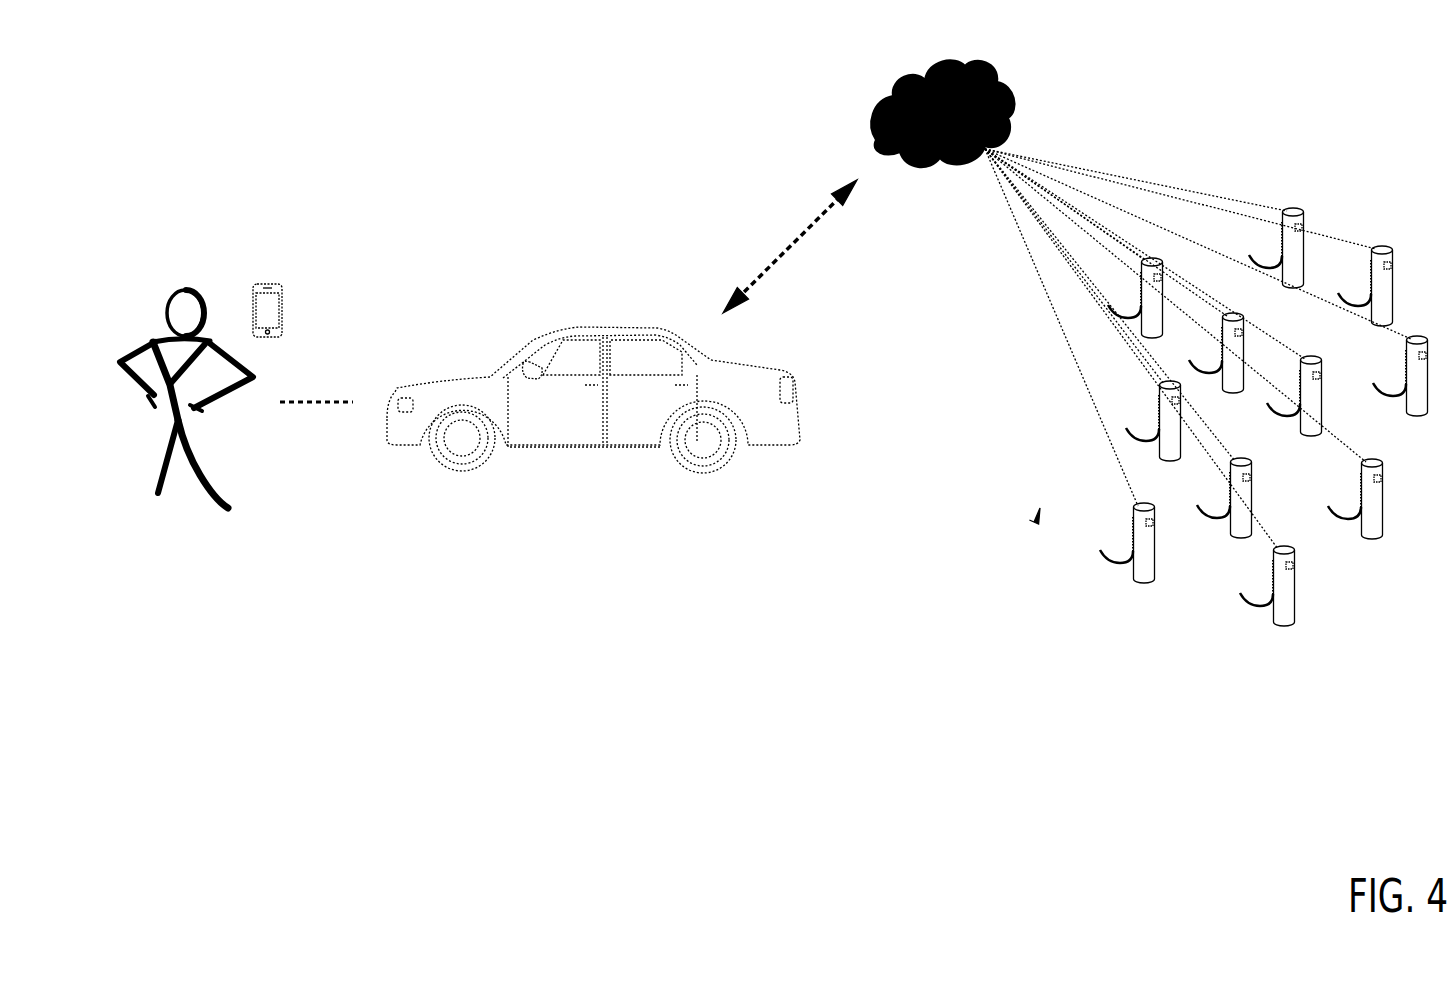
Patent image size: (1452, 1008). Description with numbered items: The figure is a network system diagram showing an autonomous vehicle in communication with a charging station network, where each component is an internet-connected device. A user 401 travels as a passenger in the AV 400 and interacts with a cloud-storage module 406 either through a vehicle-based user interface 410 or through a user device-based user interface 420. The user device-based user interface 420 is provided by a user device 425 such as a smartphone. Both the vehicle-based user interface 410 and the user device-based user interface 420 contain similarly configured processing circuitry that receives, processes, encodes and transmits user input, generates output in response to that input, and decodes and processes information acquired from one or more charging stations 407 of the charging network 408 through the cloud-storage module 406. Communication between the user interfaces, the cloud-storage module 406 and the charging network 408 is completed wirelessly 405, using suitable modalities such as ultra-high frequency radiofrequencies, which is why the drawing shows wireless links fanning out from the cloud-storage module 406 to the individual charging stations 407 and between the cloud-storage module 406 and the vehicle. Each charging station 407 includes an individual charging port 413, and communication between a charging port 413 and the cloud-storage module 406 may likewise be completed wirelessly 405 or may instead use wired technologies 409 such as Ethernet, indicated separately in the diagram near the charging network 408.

The AV 400 is at (785, 457).
The user 401 is at (202, 262).
The wireless communication 405 is at (783, 247).
The cloud-storage module 406 is at (898, 70).
The charging station 407 is at (1297, 574).
The charging network 408 is at (1320, 161).
The wired technologies 409 is at (1036, 523).
The vehicle-based user interface 410 is at (542, 366).
The charging port 413 is at (1285, 588).
The user device-based user interface 420 is at (292, 313).
The user device 425 is at (295, 280).